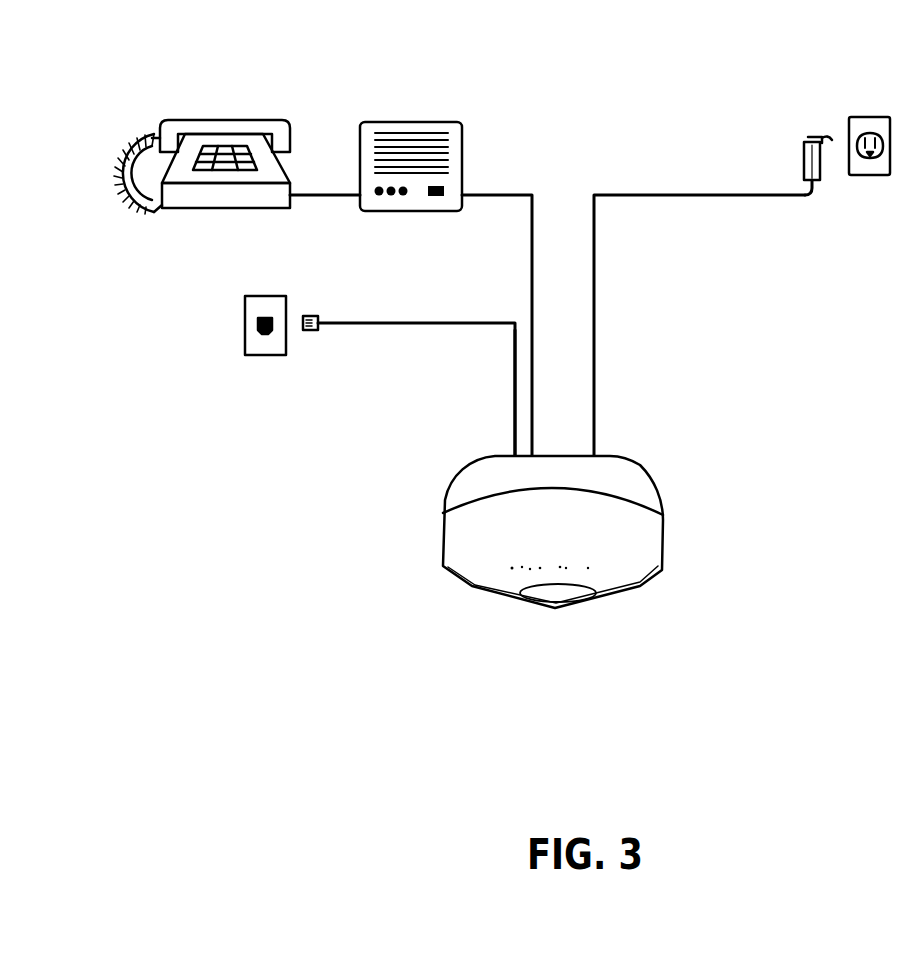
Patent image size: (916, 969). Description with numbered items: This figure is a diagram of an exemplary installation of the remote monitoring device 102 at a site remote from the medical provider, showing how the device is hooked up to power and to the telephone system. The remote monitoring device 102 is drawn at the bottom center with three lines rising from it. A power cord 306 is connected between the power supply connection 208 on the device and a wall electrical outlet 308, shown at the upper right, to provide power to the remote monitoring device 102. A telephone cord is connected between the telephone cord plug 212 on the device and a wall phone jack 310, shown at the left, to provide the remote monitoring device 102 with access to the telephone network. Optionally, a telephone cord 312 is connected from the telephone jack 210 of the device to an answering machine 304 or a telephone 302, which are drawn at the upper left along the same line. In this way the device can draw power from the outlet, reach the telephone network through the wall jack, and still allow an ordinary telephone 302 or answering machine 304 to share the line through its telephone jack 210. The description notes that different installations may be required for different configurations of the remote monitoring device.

The remote monitoring device 102 is at (660, 490).
The power supply connection 208 is at (594, 420).
The telephone jack 210 is at (537, 452).
The telephone cord plug 212 is at (511, 452).
The telephone 302 is at (208, 120).
The answering machine 304 is at (392, 122).
The power cord 306 is at (813, 140).
The wall electrical outlet 308 is at (868, 117).
The wall phone jack 310 is at (245, 330).
The telephone cord 312 is at (392, 324).